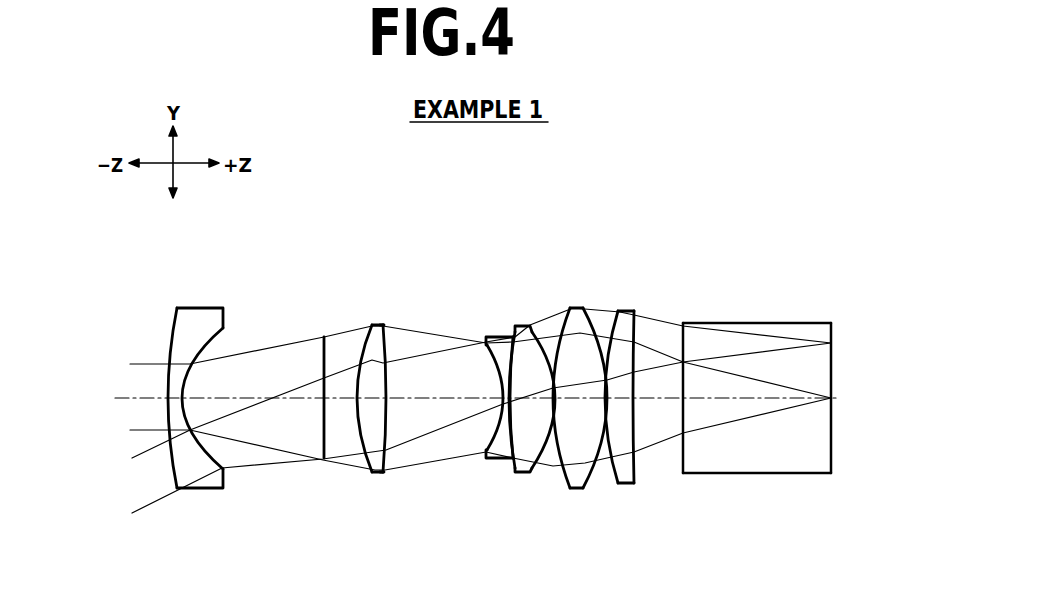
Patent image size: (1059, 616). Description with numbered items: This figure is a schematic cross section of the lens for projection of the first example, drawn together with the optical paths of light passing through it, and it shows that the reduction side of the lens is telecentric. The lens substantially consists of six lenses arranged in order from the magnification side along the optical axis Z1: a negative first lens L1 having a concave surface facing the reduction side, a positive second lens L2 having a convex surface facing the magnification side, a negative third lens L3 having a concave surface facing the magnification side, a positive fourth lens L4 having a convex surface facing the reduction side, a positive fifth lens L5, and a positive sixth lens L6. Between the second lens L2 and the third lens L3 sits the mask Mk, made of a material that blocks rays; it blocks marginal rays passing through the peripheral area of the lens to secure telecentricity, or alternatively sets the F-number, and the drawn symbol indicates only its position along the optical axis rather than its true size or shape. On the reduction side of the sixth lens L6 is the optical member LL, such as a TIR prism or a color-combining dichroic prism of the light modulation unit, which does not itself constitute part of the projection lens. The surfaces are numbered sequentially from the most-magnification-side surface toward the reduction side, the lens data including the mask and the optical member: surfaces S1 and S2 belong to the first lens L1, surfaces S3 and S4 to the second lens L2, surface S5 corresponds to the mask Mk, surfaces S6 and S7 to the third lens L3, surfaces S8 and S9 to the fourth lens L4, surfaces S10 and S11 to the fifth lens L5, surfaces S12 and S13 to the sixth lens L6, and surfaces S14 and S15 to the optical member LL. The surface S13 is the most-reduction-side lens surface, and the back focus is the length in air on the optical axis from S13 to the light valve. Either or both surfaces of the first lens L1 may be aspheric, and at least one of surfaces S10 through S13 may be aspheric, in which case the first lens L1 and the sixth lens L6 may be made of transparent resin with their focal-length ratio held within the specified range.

The first lens L1 is at (163, 405).
The second lens L2 is at (334, 409).
The third lens L3 is at (475, 403).
The fourth lens L4 is at (521, 412).
The fifth lens L5 is at (571, 423).
The sixth lens L6 is at (627, 423).
The optical member LL is at (761, 399).
The mask Mk is at (320, 365).
The optical axis Z1 is at (122, 397).
The lens surface S1 is at (168, 448).
The lens surface S2 is at (227, 462).
The lens surface S3 is at (320, 445).
The lens surface S4 is at (356, 453).
The surface S5 is at (390, 462).
The lens surface S6 is at (485, 447).
The lens surface S7 is at (505, 457).
The lens surface S8 is at (520, 470).
The lens surface S9 is at (548, 462).
The lens surface S10 is at (572, 487).
The lens surface S11 is at (595, 468).
The lens surface S12 is at (616, 470).
The lens surface S13 is at (636, 468).
The surface S14 is at (683, 473).
The surface S15 is at (832, 473).